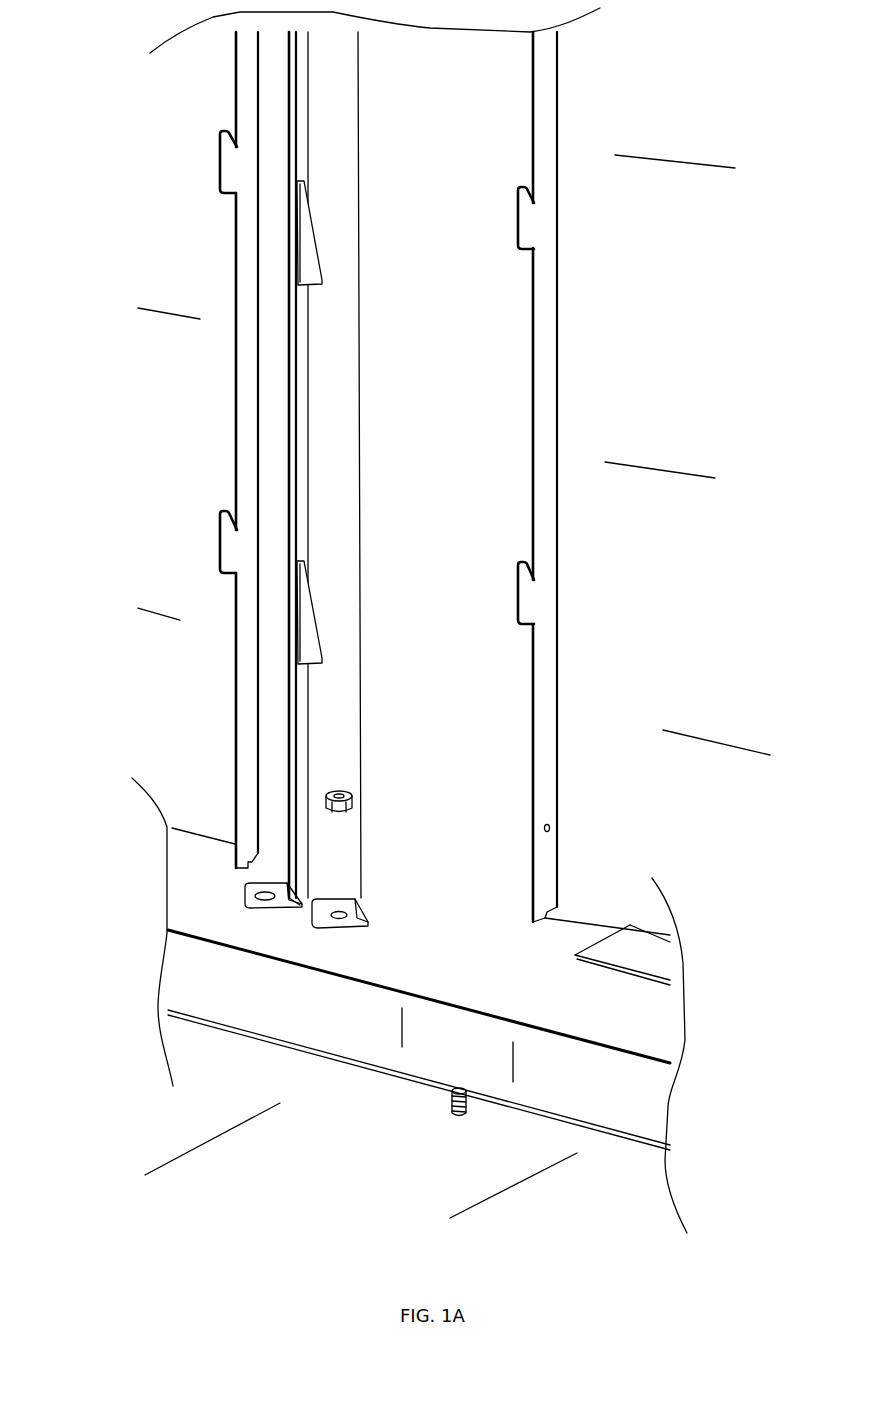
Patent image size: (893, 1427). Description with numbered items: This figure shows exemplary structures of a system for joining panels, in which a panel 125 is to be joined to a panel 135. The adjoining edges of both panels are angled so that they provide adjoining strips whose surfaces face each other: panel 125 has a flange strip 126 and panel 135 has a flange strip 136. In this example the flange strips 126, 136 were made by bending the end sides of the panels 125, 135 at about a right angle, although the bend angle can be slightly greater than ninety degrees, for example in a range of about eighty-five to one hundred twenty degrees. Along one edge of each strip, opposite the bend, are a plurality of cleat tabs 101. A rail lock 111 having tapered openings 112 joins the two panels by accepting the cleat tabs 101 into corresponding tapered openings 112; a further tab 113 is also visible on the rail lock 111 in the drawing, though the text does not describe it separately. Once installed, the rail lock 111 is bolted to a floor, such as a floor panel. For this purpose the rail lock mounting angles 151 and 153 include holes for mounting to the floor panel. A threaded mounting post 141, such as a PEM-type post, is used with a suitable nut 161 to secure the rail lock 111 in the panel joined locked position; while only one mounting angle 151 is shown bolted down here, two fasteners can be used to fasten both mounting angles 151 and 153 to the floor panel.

The cleat tab 101 is at (222, 163).
The rail lock 111 is at (327, 78).
The tapered opening 112 is at (310, 647).
The upper tab 113 is at (312, 230).
The panel 125 is at (160, 387).
The flange strip 126 is at (243, 403).
The panel 135 is at (665, 309).
The flange strip 136 is at (545, 378).
The threaded mounting post 141 is at (452, 1112).
The rail lock mounting angle 151 is at (350, 912).
The rail lock mounting angle 153 is at (245, 893).
The nut 161 is at (352, 803).